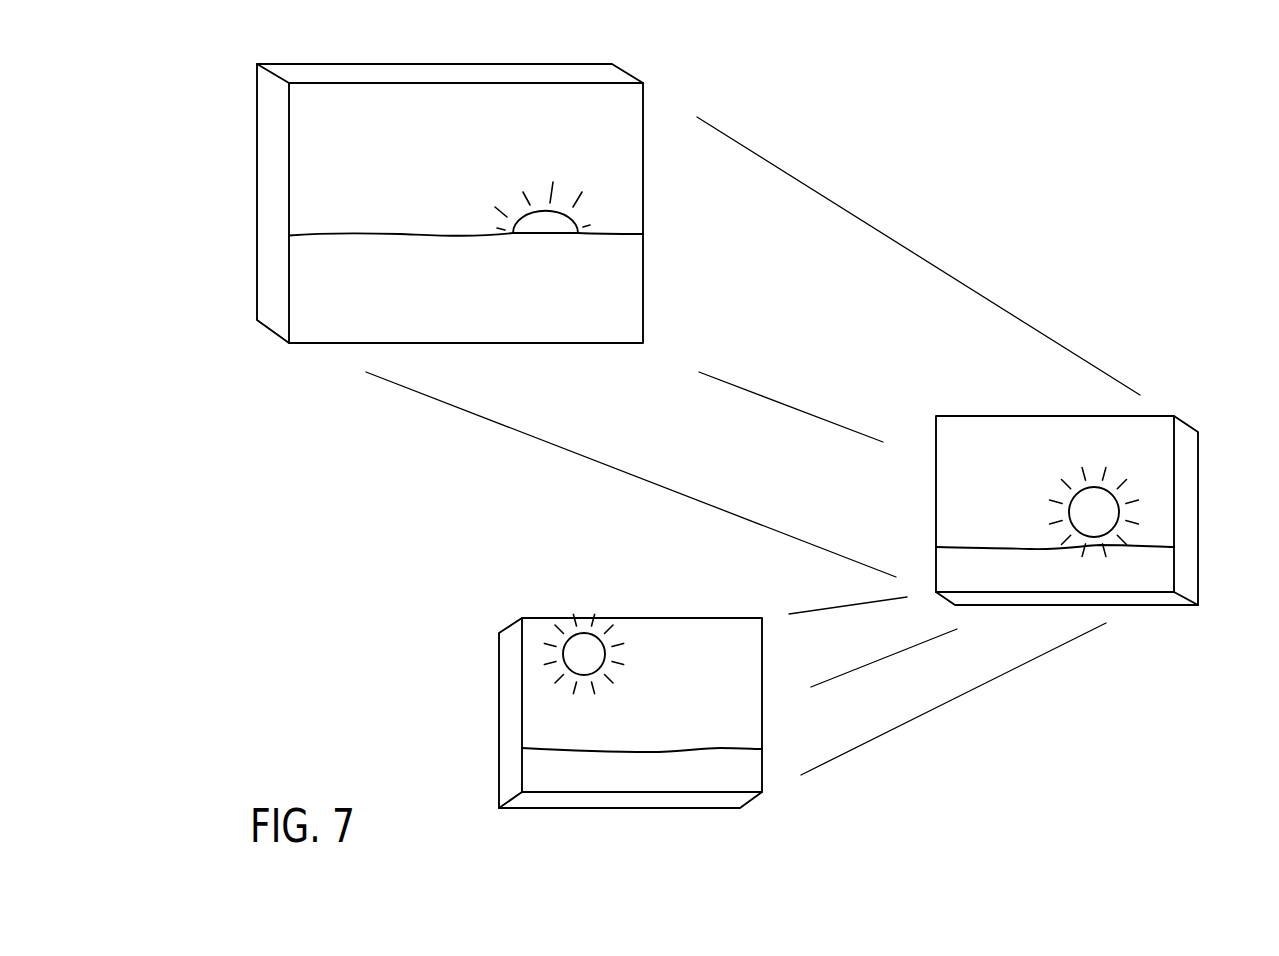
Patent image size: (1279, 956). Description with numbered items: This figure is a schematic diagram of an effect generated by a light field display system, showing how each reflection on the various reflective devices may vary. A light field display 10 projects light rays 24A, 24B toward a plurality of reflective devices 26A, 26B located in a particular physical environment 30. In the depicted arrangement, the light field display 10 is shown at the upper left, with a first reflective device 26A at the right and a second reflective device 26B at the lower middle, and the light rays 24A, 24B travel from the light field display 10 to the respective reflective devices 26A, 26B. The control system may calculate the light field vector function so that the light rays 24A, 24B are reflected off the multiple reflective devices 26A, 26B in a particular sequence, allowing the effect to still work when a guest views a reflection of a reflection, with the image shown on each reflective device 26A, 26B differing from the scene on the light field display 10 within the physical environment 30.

The light field display 10 is at (673, 80).
The light ray 24A is at (910, 222).
The light ray 24B is at (947, 728).
The reflective device 26A is at (1200, 425).
The reflective device 26B is at (482, 685).
The physical environment 30 is at (567, 522).